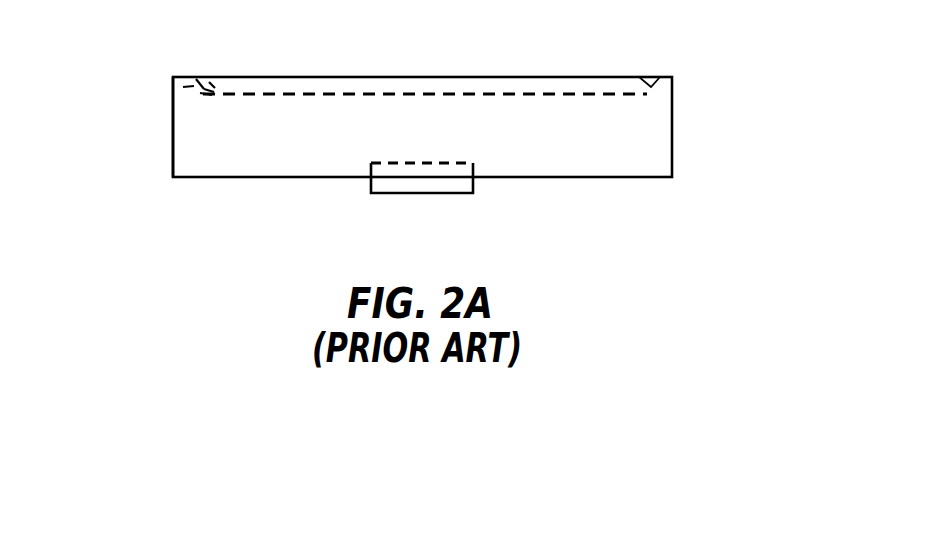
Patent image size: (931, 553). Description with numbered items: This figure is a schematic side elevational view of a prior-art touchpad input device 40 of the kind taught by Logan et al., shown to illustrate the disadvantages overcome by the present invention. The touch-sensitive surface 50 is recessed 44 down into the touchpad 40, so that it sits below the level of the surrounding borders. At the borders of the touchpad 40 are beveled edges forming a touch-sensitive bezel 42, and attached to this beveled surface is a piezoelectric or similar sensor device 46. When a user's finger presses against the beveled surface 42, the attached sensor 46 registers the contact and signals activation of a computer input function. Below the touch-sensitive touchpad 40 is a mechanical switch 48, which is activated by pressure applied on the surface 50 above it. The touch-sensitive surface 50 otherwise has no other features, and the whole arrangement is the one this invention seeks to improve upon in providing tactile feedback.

The touchpad input device 40 is at (698, 119).
The touch-sensitive bezel 42 is at (172, 94).
The recess 44 is at (637, 76).
The sensor device 46 is at (224, 77).
The mechanical switch 48 is at (421, 163).
The touch-sensitive surface 50 is at (476, 93).